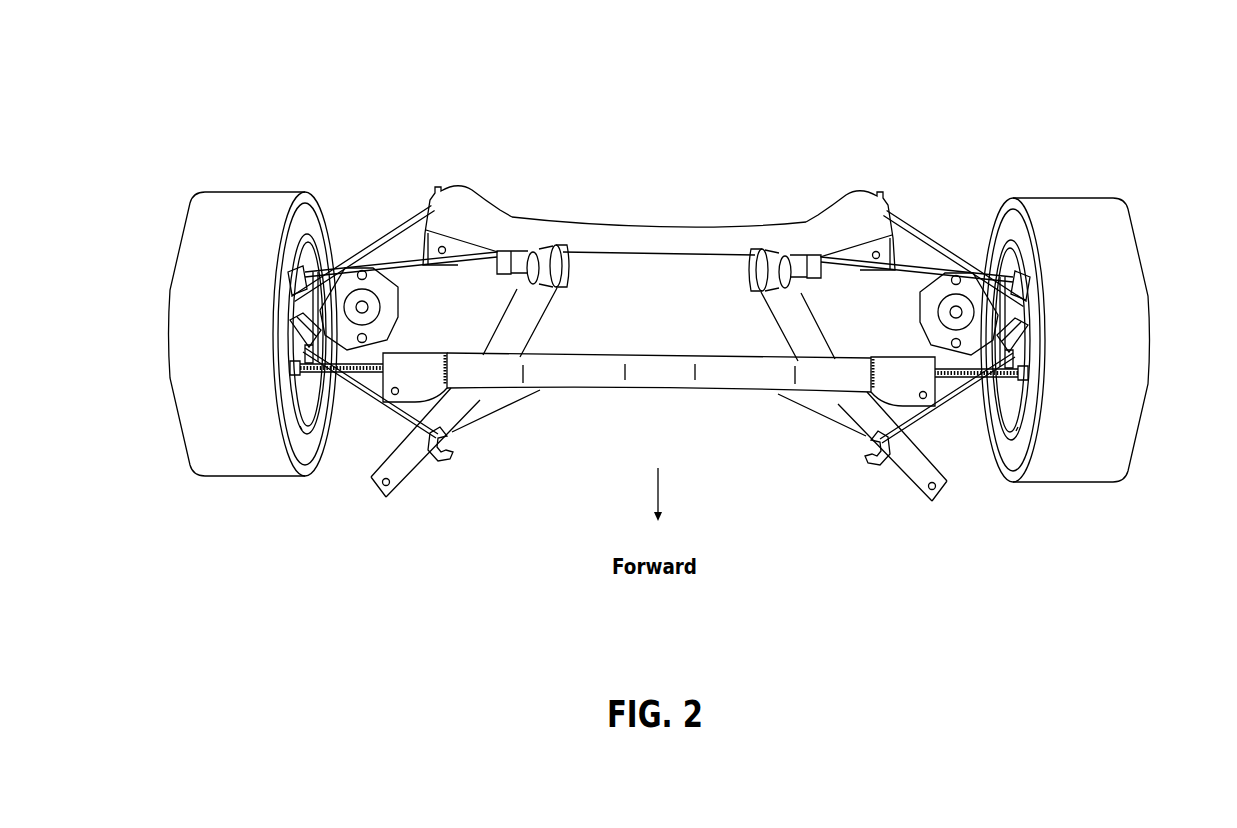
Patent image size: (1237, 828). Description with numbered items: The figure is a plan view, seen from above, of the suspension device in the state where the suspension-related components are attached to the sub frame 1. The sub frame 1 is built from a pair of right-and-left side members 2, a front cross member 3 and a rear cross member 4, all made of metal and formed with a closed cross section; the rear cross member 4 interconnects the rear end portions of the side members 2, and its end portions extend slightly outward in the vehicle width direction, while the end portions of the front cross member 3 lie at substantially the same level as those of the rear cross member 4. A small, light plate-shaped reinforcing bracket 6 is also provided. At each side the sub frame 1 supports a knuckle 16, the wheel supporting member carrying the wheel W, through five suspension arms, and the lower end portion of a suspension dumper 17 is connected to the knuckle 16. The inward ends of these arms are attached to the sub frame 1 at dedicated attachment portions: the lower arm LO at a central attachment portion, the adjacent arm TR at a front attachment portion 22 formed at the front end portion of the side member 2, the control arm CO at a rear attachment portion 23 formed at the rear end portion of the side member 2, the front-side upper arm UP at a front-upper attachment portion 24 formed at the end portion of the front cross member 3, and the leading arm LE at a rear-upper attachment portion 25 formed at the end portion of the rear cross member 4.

The sub frame 1 is at (612, 108).
The side members 2 is at (910, 478).
The front cross member 3 is at (583, 380).
The rear cross member 4 is at (665, 232).
The plate-shaped reinforcing bracket 6 is at (810, 402).
The knuckle 16 is at (1030, 315).
The suspension dumper 17 is at (930, 303).
The front attachment portion 22 is at (868, 455).
The rear attachment portion 23 is at (810, 257).
The front-upper attachment portion 24 is at (900, 372).
The rear-upper attachment portion 25 is at (852, 198).
The wheel W is at (1137, 390).
The leading arm LE is at (917, 225).
The control arm CO is at (923, 266).
The lower arm LO is at (1033, 335).
The front-side upper arm UP is at (1020, 427).
The suspension arm (trailing arm) TR is at (917, 417).